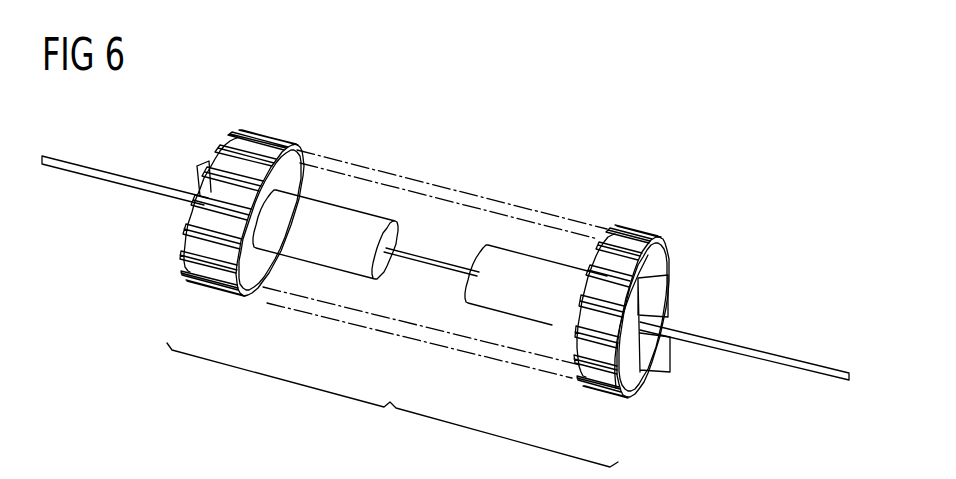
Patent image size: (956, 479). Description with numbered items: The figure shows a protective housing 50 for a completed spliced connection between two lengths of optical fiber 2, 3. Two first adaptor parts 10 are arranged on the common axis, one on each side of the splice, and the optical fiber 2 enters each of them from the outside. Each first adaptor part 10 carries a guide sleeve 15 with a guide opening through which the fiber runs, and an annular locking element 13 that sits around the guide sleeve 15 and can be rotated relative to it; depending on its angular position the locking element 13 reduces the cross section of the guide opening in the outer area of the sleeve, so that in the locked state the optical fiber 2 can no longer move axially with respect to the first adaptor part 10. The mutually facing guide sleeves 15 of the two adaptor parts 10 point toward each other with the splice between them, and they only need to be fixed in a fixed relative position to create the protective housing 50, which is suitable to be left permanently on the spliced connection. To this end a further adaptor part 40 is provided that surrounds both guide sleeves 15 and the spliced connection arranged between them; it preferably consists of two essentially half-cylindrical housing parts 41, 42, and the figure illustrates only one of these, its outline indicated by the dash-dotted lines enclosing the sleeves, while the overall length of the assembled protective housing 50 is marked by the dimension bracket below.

The optical fiber 2 is at (445, 250).
The rotor shaft 3 is at (122, 177).
The first adaptor part 10 is at (430, 301).
The guide sleeve 15 is at (313, 247).
The locking element 13 is at (217, 273).
The further adaptor part 40 is at (435, 252).
The housing part 41 is at (435, 252).
The housing part 42 is at (470, 157).
The protective housing 50 is at (392, 405).